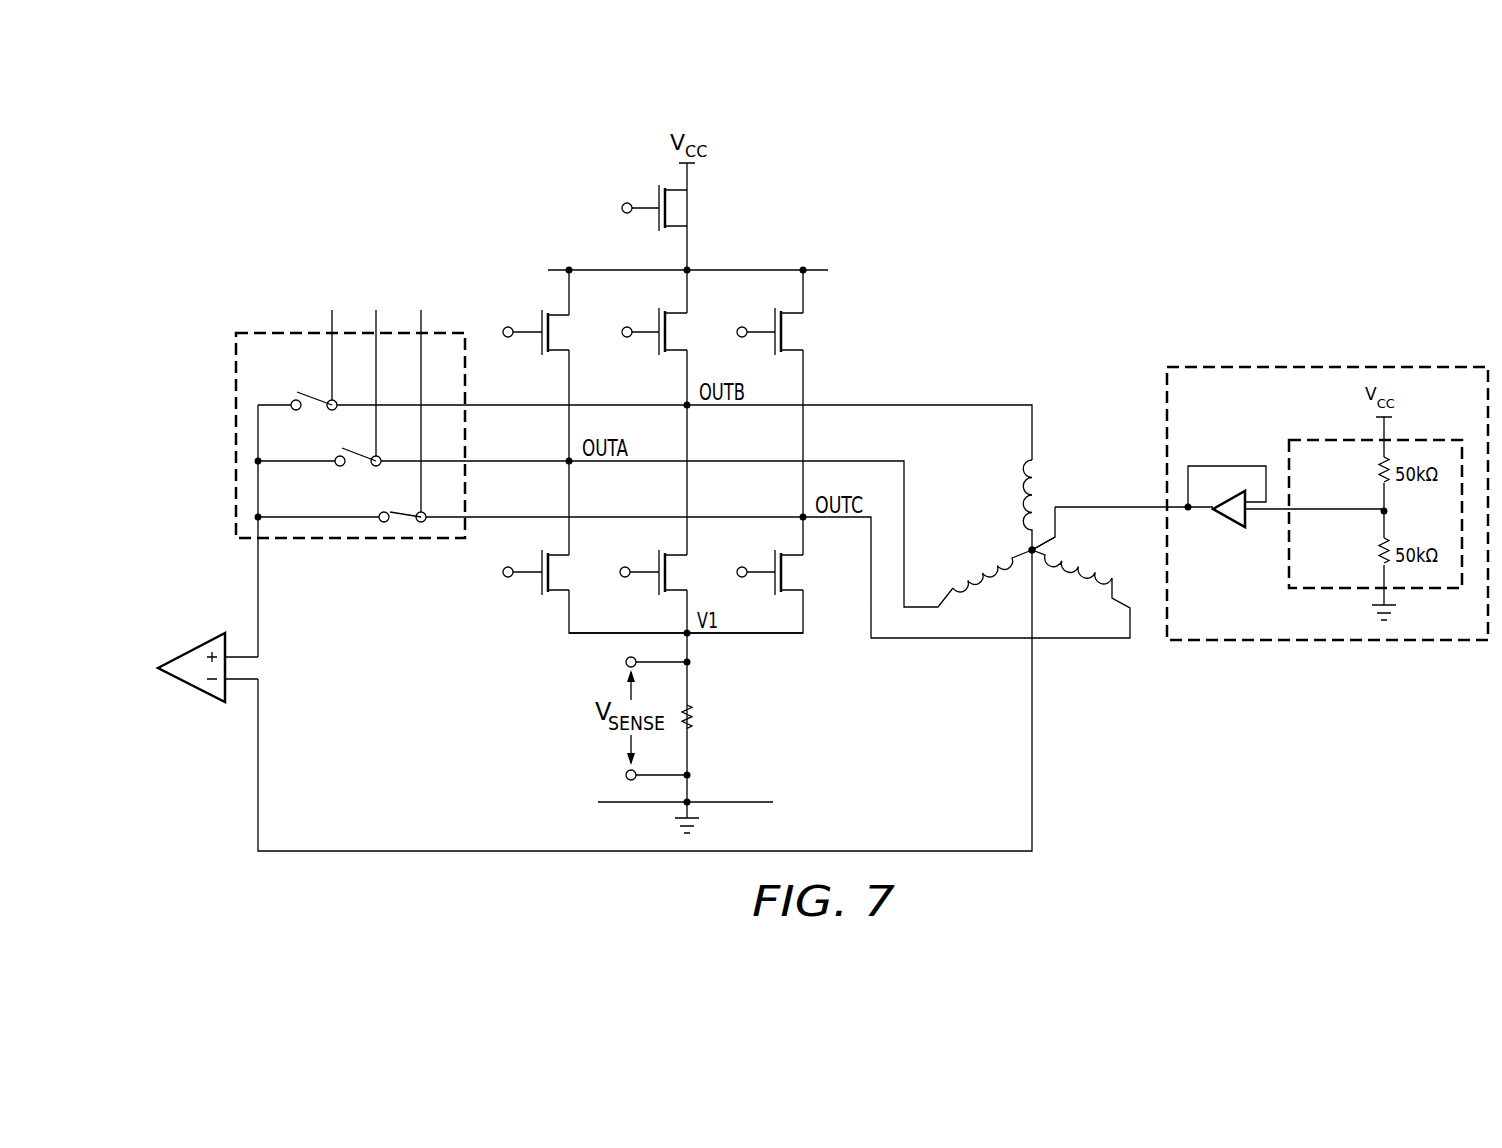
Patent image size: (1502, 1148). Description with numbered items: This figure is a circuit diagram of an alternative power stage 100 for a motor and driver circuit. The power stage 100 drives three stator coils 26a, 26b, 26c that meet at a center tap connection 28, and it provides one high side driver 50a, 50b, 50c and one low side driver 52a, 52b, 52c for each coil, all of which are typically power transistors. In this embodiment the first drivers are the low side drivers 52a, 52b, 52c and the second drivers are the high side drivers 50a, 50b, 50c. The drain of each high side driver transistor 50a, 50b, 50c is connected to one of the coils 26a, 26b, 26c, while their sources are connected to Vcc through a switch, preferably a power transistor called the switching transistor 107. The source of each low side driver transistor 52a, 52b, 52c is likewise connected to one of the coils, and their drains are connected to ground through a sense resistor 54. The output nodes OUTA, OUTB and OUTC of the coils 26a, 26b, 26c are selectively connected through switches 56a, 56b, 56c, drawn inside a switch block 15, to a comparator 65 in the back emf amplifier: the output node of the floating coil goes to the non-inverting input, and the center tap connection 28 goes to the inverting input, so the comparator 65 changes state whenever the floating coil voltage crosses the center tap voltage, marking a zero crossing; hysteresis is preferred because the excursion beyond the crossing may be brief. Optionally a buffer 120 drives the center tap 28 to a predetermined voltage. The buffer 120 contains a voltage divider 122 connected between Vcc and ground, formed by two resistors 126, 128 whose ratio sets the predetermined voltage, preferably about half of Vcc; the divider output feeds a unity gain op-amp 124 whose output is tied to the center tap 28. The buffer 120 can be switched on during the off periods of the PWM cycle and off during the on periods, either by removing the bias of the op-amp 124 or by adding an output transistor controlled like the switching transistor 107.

The switch network 15 is at (287, 333).
The switch 56a is at (320, 398).
The switch 56b is at (360, 453).
The switch 56c is at (402, 511).
The switching transistor 107 is at (657, 197).
The high side driver 50a is at (540, 322).
The high side driver 50b is at (657, 322).
The high side driver 50c is at (773, 322).
The low side driver 52a is at (540, 582).
The low side driver 52b is at (657, 582).
The low side driver 52c is at (773, 562).
The sense resistor 54 is at (696, 710).
The power stage 100 is at (547, 683).
The comparator 65 is at (190, 688).
The stator coil 26a is at (985, 557).
The stator coil 26b is at (1013, 488).
The stator coil 26c is at (1110, 575).
The center tap connection 28 is at (1036, 556).
The buffer 120 is at (1335, 367).
The voltage divider 122 is at (1438, 440).
The unity gain op-amp 124 is at (1225, 521).
The resistor 126 is at (1378, 478).
The resistor 128 is at (1378, 552).